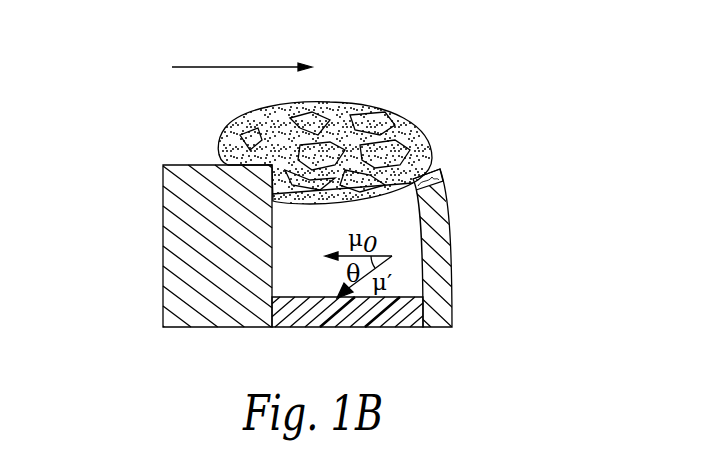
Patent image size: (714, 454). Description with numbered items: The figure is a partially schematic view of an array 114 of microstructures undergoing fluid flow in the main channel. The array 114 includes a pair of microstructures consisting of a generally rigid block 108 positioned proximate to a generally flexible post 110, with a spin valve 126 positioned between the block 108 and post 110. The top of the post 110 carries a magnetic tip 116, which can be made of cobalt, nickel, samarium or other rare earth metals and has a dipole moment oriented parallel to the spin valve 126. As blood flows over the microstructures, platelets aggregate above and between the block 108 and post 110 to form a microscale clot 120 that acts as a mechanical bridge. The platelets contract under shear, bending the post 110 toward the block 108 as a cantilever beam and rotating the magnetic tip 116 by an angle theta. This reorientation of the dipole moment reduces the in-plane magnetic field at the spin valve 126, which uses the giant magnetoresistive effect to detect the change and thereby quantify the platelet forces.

The block 108 is at (182, 253).
The post 110 is at (440, 280).
The array 114 is at (150, 82).
The magnetic tip 116 is at (440, 177).
The clot 120 is at (383, 110).
The spin valve 126 is at (345, 313).